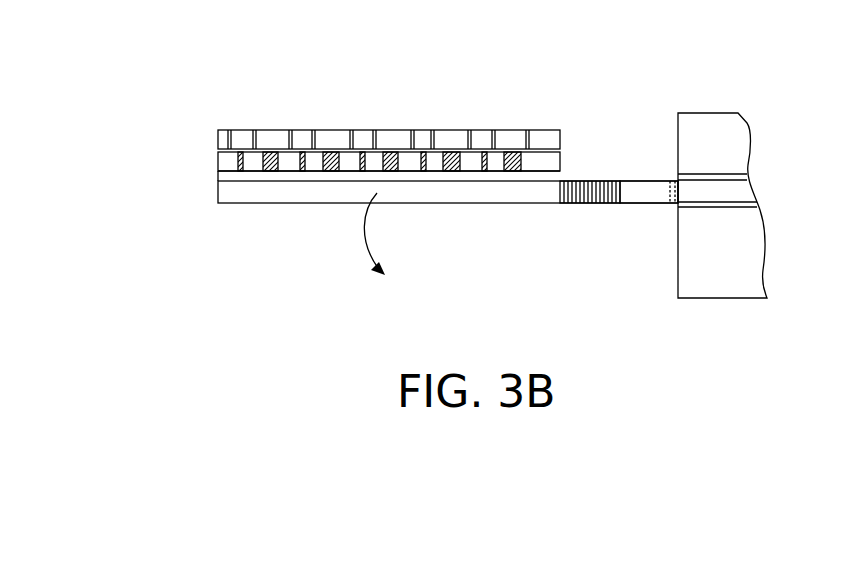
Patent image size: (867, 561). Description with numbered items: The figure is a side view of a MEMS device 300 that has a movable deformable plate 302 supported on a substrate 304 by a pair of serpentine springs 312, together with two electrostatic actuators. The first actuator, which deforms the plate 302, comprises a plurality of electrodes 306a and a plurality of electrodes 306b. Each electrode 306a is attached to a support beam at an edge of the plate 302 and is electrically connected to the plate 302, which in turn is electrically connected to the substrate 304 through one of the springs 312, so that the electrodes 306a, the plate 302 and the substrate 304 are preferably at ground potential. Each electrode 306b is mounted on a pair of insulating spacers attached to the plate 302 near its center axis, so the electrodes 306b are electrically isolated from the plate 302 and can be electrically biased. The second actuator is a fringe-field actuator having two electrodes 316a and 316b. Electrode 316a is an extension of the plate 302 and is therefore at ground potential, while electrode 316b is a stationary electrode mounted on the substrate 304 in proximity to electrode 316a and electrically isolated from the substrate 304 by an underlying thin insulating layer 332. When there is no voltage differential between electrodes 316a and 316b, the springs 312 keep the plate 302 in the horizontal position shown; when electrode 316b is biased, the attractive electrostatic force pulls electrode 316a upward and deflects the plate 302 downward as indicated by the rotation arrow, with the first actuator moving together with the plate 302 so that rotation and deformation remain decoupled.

The MEMS device 300 is at (470, 308).
The deformable plate 302 is at (293, 190).
The substrate 304 is at (652, 229).
The electrodes 306a is at (202, 162).
The electrodes 306b is at (202, 137).
The serpentine springs 312 is at (583, 180).
The electrode 316a is at (641, 180).
The electrode 316b is at (745, 125).
The thin insulating layer 332 is at (747, 178).